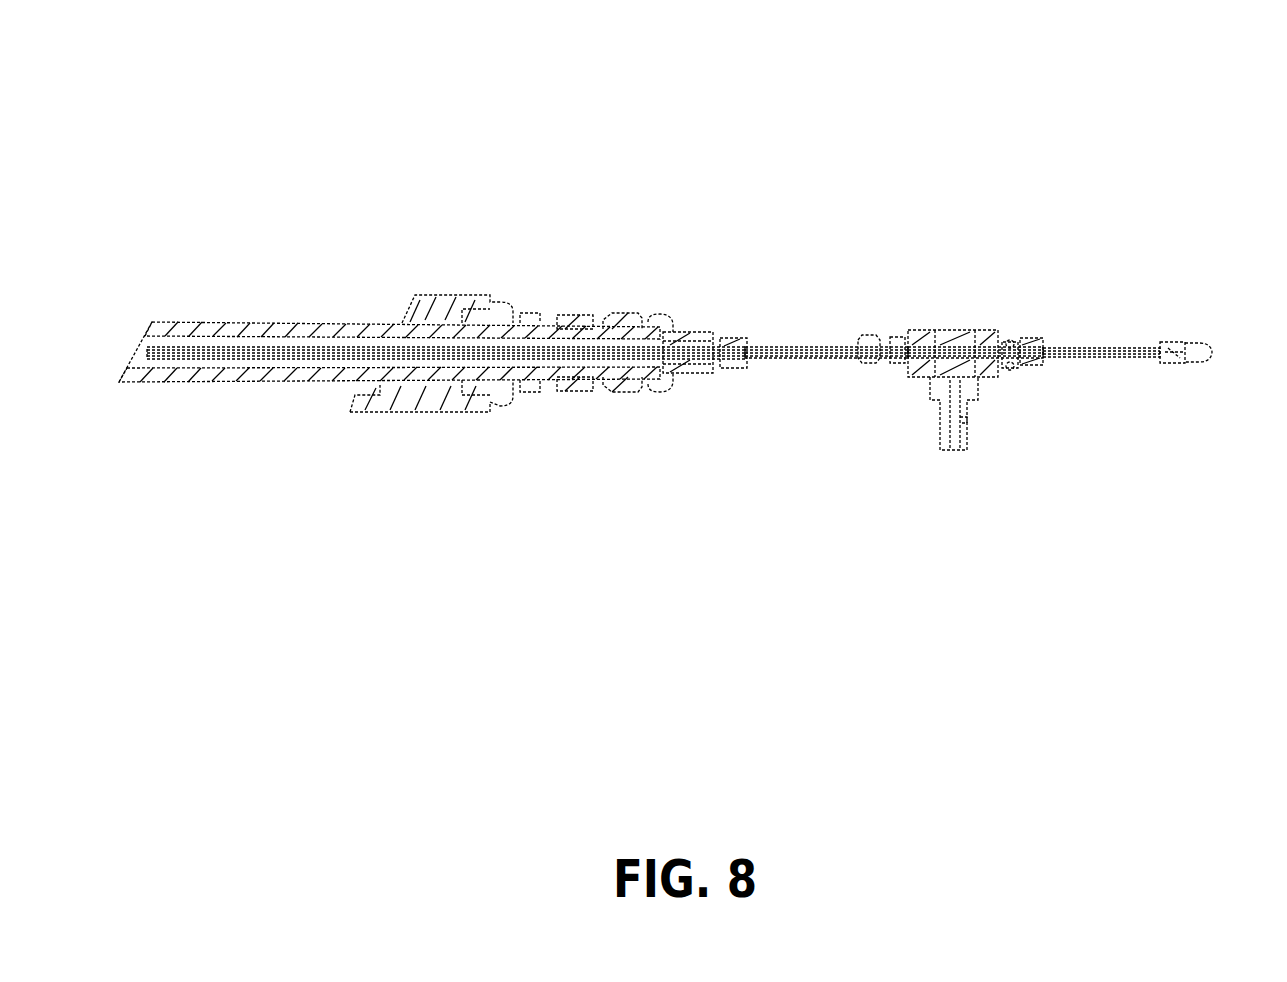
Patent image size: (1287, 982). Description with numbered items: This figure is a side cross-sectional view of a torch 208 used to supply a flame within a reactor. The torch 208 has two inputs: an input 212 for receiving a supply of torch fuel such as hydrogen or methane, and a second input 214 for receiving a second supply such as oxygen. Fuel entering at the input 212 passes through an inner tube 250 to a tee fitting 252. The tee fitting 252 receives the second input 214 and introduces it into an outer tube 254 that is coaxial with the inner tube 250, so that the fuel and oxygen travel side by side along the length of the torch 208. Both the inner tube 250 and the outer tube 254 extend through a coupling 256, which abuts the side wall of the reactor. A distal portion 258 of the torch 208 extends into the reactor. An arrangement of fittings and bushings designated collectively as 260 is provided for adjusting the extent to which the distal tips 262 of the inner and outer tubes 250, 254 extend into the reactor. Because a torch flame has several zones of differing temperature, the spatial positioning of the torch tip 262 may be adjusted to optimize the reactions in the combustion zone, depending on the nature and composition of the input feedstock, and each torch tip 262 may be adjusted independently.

The torch 208 is at (950, 88).
The input 212 is at (1200, 345).
The second input 214 is at (968, 440).
The inner tube 250 is at (1145, 349).
The tee fitting 252 is at (956, 329).
The outer tube 254 is at (812, 346).
The coupling 256 is at (448, 294).
The distal portion 258 is at (163, 312).
The arrangement of fittings and bushings 260 is at (527, 310).
The distal tips 262 is at (138, 354).